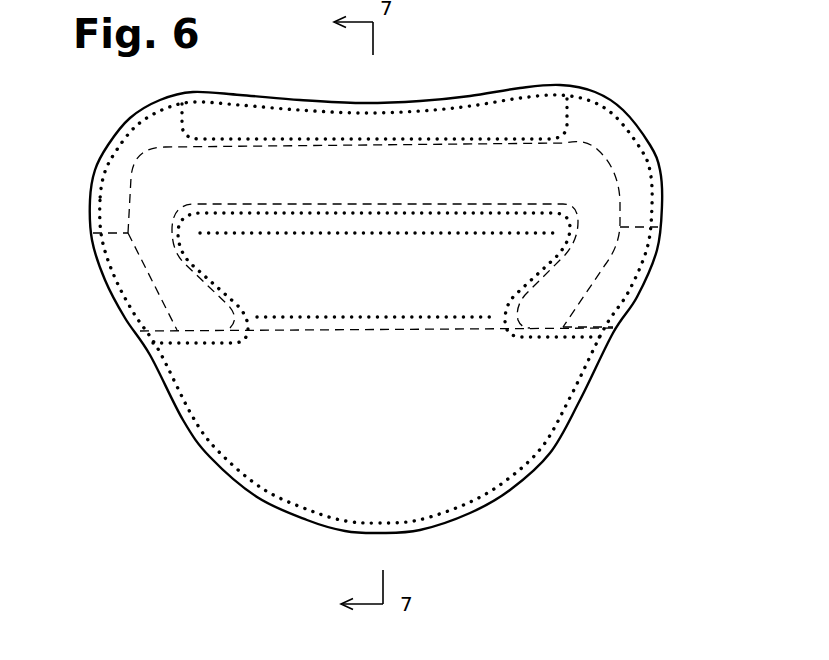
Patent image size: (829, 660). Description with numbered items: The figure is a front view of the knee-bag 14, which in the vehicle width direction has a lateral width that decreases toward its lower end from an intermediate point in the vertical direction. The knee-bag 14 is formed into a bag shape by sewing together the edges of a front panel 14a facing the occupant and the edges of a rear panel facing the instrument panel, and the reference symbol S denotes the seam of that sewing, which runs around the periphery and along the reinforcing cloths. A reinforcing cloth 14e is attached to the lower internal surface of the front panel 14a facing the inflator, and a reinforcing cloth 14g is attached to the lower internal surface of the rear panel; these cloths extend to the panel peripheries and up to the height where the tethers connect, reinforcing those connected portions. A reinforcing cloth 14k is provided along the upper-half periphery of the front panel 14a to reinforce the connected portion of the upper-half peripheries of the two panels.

The knee-bag 14 is at (394, 275).
The front panel 14a is at (505, 448).
The reinforcing cloth 14k is at (616, 137).
The reinforcing cloth 14e is at (580, 204).
The reinforcing cloth 14g is at (357, 350).
The seam S is at (221, 140).